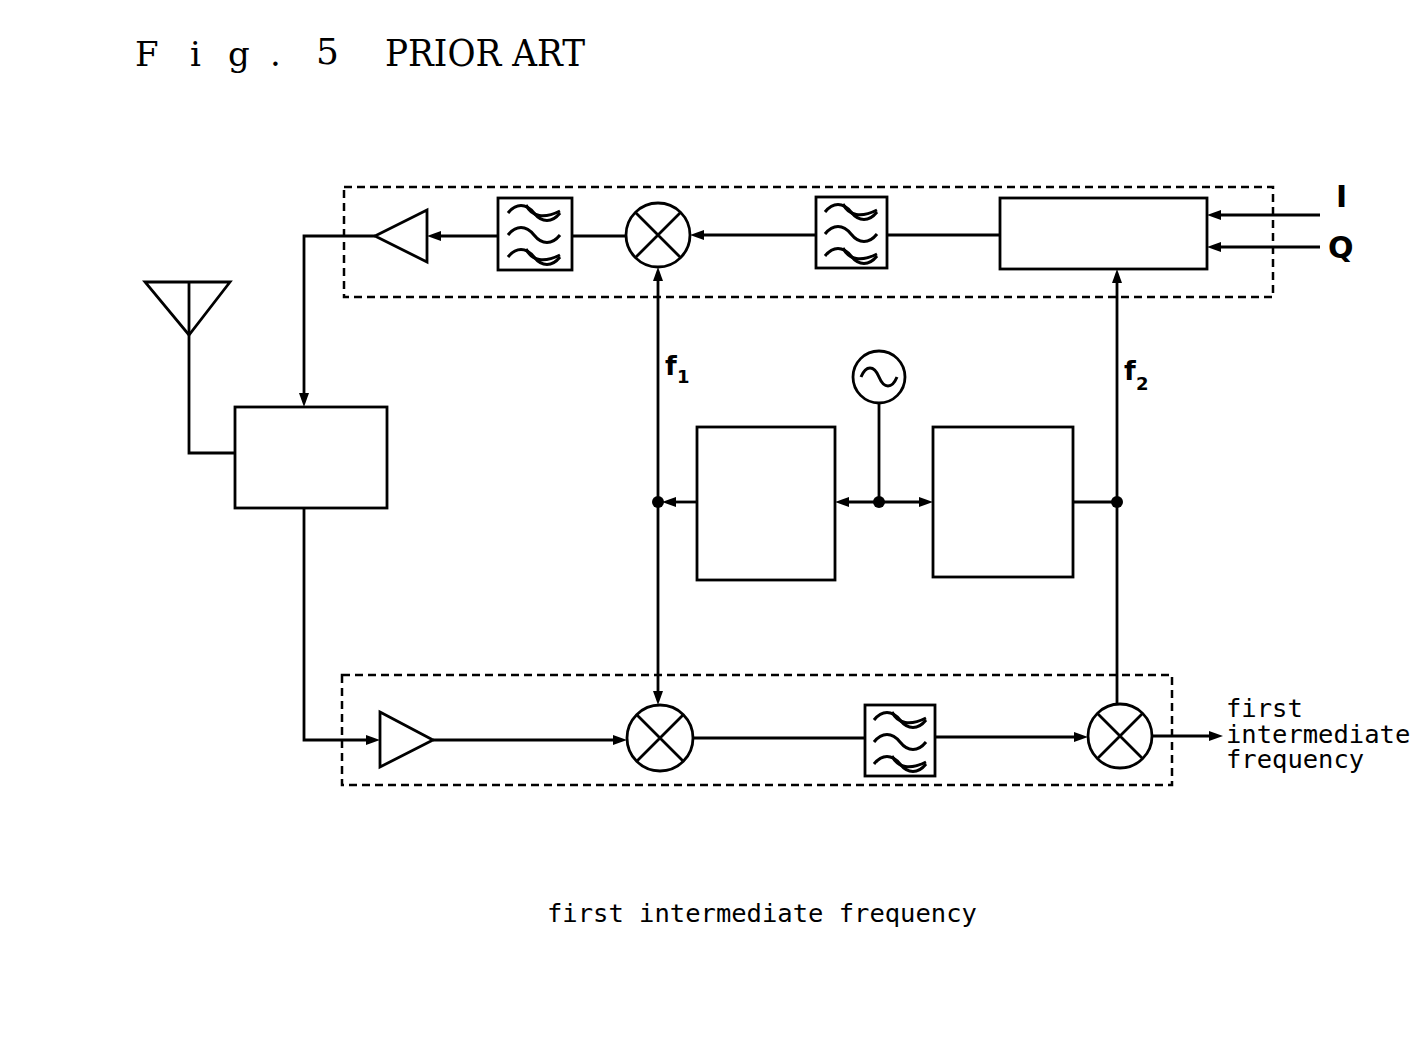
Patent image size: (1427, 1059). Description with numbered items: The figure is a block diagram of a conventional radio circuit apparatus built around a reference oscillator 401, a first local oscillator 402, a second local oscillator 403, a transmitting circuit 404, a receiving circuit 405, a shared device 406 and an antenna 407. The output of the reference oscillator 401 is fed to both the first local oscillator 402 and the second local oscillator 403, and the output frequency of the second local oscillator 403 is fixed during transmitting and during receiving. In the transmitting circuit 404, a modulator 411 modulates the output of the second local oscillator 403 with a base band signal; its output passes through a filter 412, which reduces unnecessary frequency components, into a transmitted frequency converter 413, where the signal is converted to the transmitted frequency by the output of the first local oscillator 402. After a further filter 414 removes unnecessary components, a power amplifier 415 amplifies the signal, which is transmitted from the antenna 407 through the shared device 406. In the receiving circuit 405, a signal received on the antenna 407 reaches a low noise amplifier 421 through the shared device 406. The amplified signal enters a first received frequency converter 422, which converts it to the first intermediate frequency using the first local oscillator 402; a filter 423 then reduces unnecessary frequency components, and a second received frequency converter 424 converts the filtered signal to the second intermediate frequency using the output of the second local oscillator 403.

The reference oscillator 401 is at (898, 361).
The first local oscillator 402 is at (748, 581).
The second local oscillator 403 is at (985, 578).
The transmitting circuit 404 is at (1257, 185).
The receiving circuit 405 is at (1163, 674).
The shared device 406 is at (388, 455).
The antenna 407 is at (188, 282).
The modulator 411 is at (1080, 198).
The filter 412 is at (846, 197).
The transmitted frequency converter 413 is at (647, 205).
The filter 414 is at (527, 198).
The power amplifier 415 is at (395, 215).
The low noise amplifier 421 is at (400, 762).
The first received frequency converter 422 is at (657, 770).
The filter 423 is at (895, 776).
The second received frequency converter 424 is at (1108, 768).